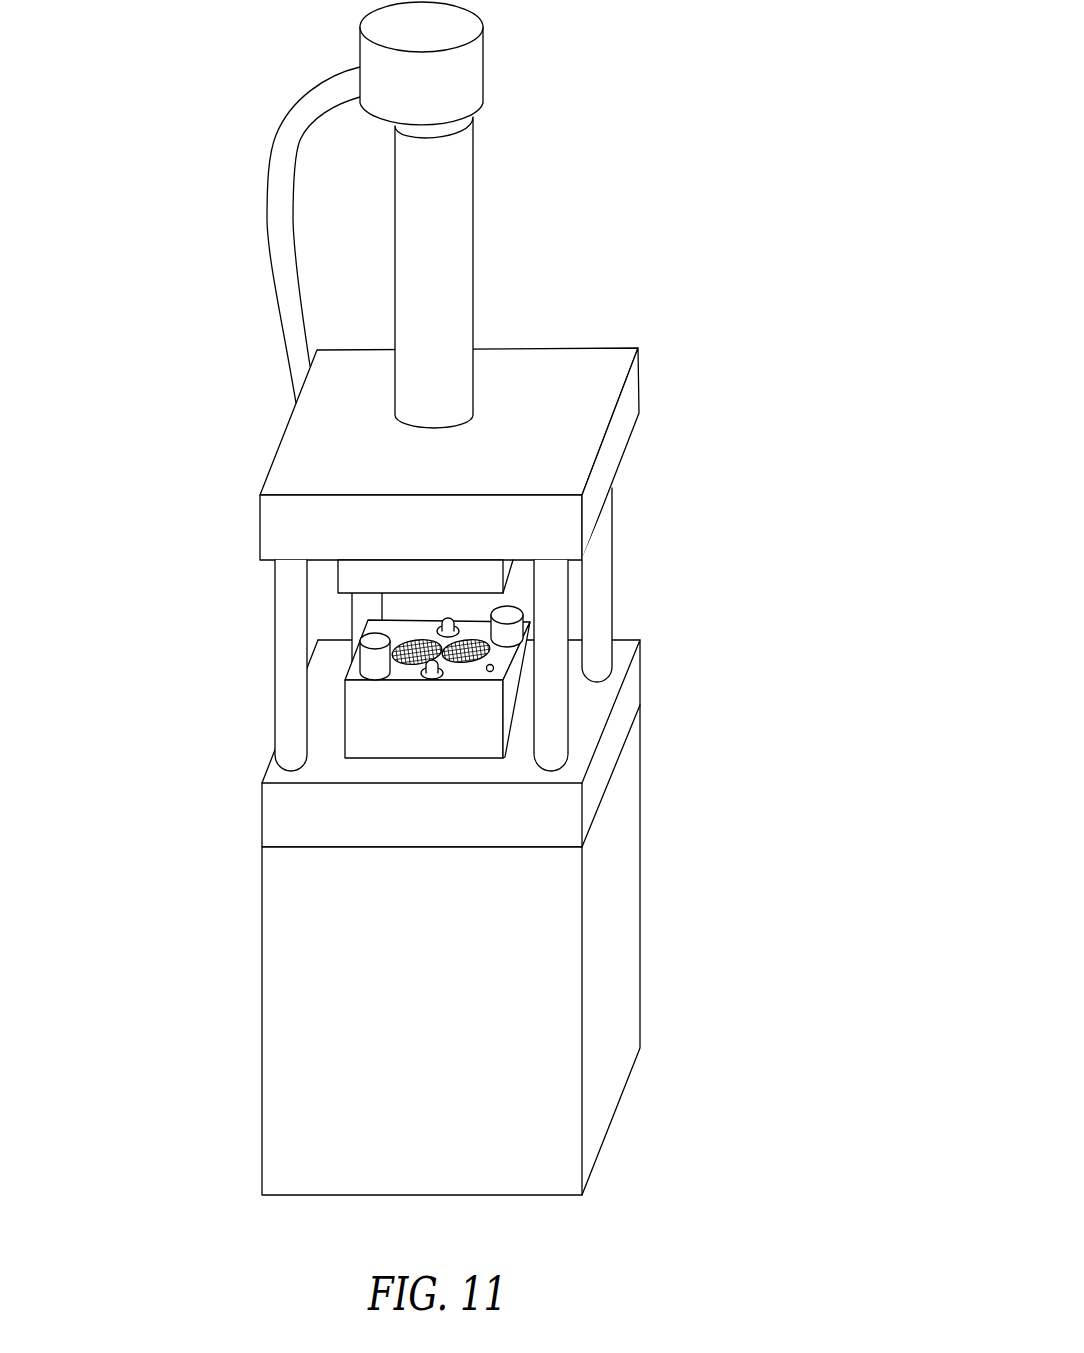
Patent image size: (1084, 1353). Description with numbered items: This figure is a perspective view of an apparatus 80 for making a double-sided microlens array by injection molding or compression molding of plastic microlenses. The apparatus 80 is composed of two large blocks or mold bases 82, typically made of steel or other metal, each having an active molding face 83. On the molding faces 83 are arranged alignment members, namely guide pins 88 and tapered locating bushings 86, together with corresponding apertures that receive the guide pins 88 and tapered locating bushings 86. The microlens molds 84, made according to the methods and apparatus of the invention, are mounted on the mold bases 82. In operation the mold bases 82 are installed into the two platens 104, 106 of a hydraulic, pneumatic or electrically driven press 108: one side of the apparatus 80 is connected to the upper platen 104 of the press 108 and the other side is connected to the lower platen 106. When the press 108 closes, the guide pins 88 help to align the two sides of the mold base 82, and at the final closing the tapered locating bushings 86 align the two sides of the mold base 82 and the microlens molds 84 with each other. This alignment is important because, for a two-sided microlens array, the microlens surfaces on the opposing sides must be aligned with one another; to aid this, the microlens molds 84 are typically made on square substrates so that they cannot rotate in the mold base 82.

The apparatus for molding a two-sided microlens array 80 is at (594, 150).
The mold base 82 is at (483, 688).
The active molding face 83 is at (490, 668).
The microlens mold 84 is at (467, 640).
The tapered locating bushing 86 is at (445, 630).
The guide pin 88 is at (360, 658).
The platen 104 is at (642, 382).
The platen 106 is at (642, 682).
The press 108 is at (512, 281).